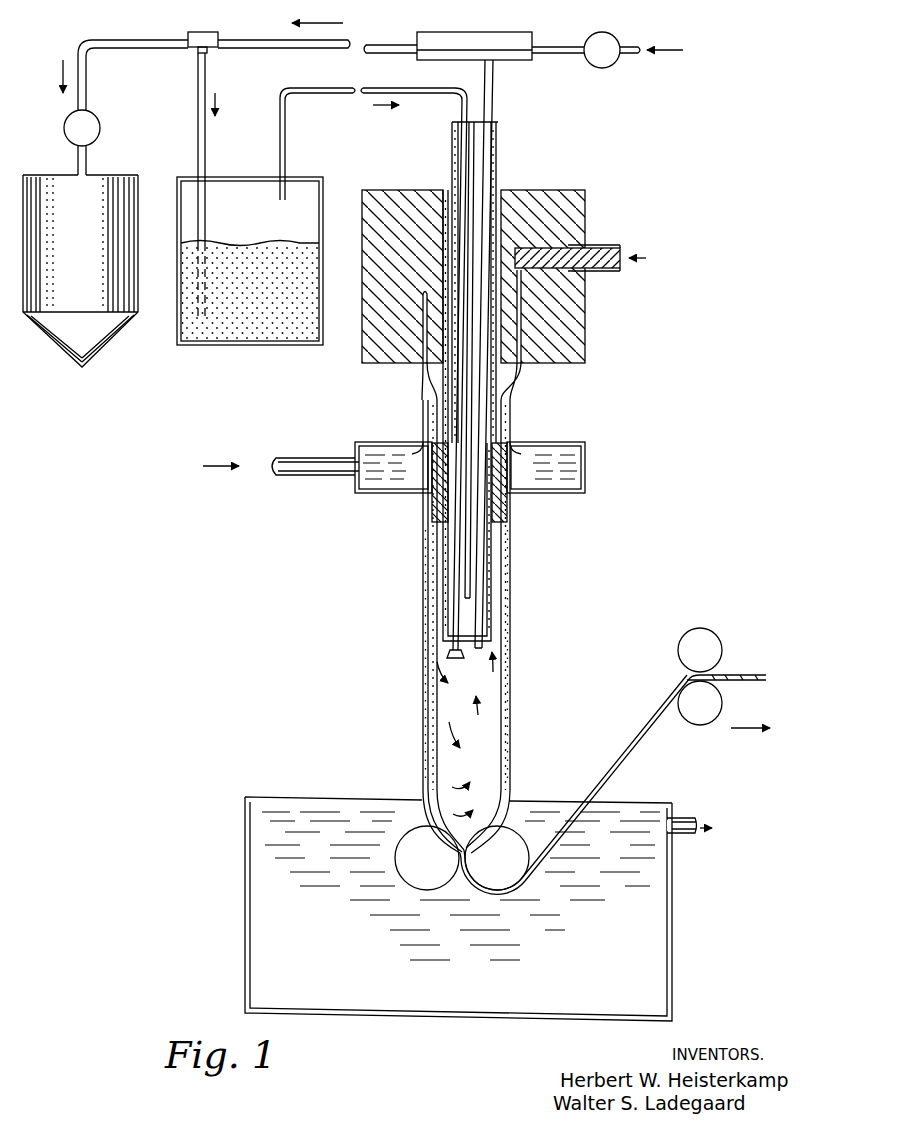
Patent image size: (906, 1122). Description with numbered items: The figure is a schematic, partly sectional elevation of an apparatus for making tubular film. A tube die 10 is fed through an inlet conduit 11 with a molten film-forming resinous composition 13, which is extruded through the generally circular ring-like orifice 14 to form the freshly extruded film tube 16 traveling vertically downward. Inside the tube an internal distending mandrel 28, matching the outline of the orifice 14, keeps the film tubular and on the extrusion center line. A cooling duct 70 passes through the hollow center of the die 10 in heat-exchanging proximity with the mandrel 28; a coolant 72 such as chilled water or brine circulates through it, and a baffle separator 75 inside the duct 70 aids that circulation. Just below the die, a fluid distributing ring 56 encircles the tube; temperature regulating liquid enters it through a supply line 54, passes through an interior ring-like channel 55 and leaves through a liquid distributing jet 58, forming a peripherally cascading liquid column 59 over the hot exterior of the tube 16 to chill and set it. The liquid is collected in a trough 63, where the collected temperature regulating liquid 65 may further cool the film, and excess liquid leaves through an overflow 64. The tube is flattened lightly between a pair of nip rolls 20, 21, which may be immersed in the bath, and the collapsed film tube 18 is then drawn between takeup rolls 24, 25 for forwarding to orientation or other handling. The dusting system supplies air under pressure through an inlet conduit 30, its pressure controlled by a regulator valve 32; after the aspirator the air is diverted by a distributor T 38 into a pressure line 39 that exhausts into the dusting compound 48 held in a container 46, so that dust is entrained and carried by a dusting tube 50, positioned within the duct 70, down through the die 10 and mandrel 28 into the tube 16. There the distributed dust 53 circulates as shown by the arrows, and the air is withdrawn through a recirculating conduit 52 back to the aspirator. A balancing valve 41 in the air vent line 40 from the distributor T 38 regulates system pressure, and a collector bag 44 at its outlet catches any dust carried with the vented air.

The tube die 10 is at (365, 340).
The inlet conduit 11 is at (598, 246).
The molten film-forming resinous composition 13 is at (386, 338).
The ring-like orifice 14 is at (424, 368).
The freshly extruded film tube 16 is at (425, 384).
The collapsed film tube 18 is at (606, 770).
The nip roll 20 is at (433, 857).
The nip roll 21 is at (503, 857).
The takeup roll 24 is at (708, 646).
The takeup roll 25 is at (718, 703).
The internal distending mandrel 28 is at (428, 428).
The inlet conduit 30 is at (640, 44).
The regulator valve 32 is at (612, 66).
The distributor T 38 is at (192, 47).
The pressure line 39 is at (206, 162).
The air vent line 40 is at (155, 39).
The balancing valve 41 is at (100, 128).
The collector bag 44 is at (120, 197).
The container 46 is at (321, 244).
The dusting compound 48 is at (257, 335).
The dusting tube 50 is at (283, 146).
The recirculating conduit 52 is at (490, 101).
The distributed dust 53 is at (478, 757).
The supply line 54 is at (272, 476).
The ring-like channel 55 is at (383, 483).
The fluid distributing ring 56 is at (356, 480).
The liquid distributing jet 58 is at (432, 448).
The cascading liquid column 59 is at (425, 613).
The trough 63 is at (437, 1017).
The overflow 64 is at (689, 835).
The collected temperature regulating liquid 65 is at (604, 956).
The cooling duct 70 is at (446, 545).
The coolant 72 is at (452, 132).
The baffle separator 75 is at (477, 143).